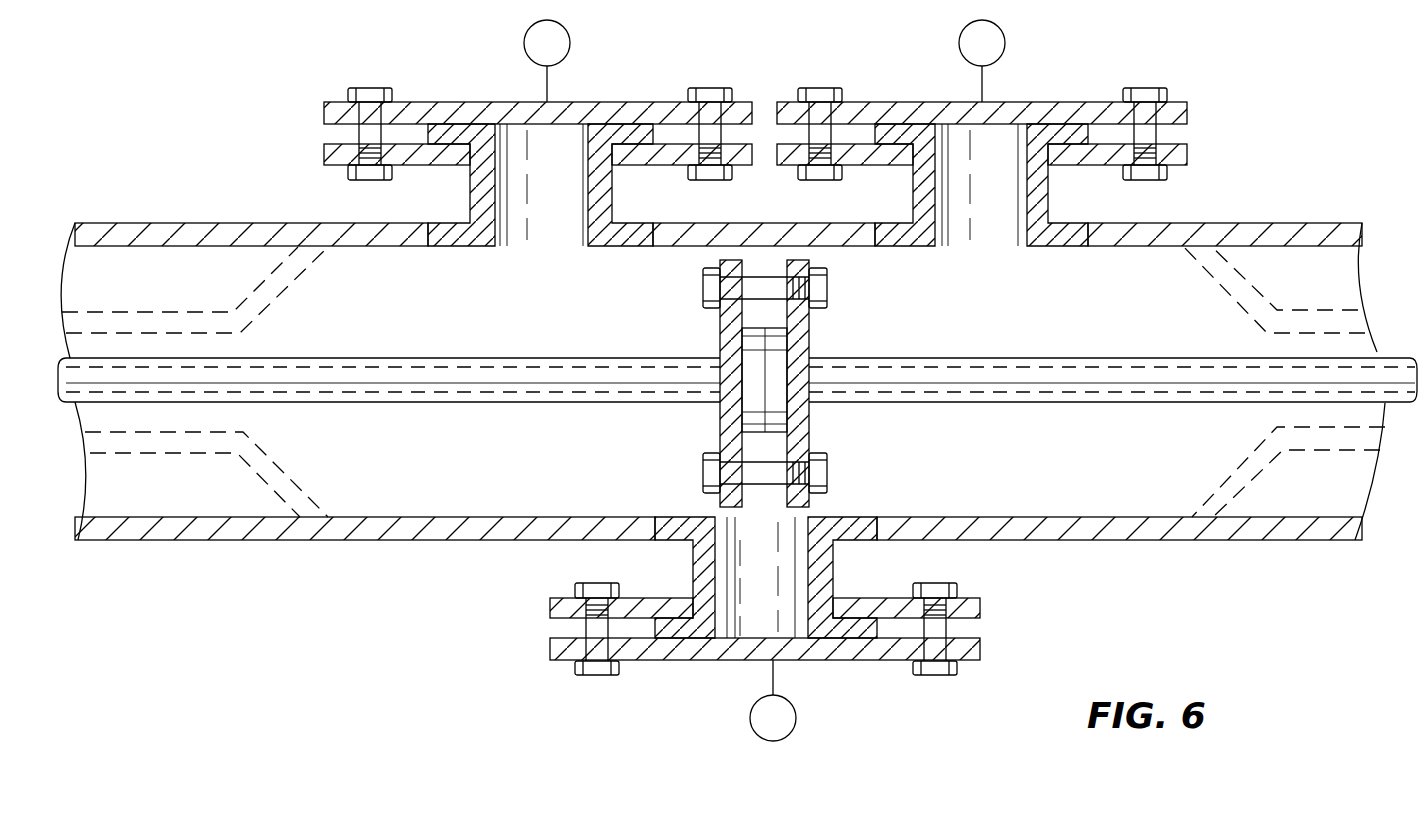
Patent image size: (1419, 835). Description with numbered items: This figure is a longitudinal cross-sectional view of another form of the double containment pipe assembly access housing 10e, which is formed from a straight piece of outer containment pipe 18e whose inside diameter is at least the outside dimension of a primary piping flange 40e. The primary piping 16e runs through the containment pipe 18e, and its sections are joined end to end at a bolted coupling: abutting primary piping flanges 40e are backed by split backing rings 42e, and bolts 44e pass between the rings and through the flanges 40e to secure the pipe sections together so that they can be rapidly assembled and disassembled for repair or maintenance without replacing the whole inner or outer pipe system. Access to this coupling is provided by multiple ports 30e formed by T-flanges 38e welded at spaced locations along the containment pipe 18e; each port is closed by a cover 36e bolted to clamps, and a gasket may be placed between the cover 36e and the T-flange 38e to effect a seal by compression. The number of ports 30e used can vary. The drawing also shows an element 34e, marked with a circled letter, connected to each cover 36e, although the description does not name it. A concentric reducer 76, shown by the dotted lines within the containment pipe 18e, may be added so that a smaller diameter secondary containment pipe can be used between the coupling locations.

The access housing 10e is at (1178, 200).
The primary piping 16e is at (553, 384).
The containment pipe 18e is at (208, 230).
The port 30e is at (752, 612).
The voltmeter 34e is at (571, 43).
The cover 36e is at (415, 110).
The T-flange 38e is at (638, 128).
The primary piping flange 40e is at (748, 412).
The split backing ring 42e is at (803, 330).
The bolt 44e is at (745, 292).
The concentric reducer 76 is at (290, 294).